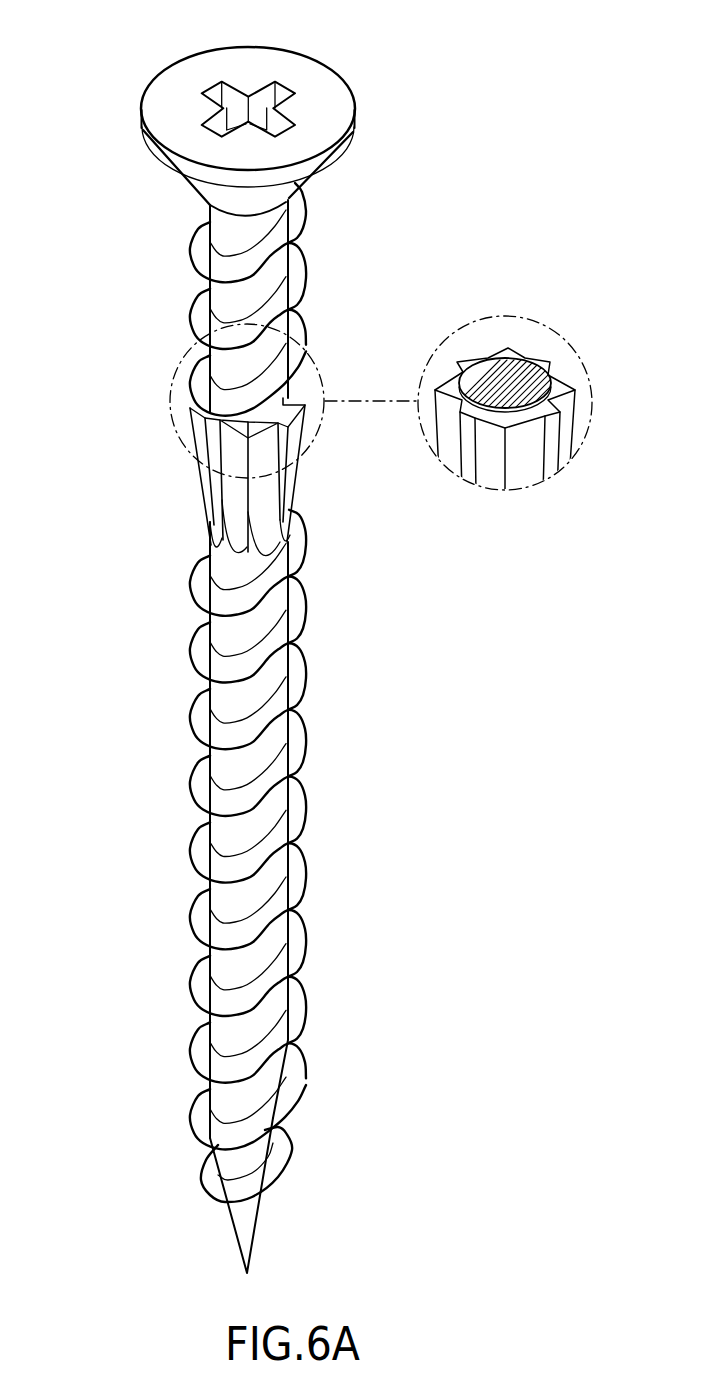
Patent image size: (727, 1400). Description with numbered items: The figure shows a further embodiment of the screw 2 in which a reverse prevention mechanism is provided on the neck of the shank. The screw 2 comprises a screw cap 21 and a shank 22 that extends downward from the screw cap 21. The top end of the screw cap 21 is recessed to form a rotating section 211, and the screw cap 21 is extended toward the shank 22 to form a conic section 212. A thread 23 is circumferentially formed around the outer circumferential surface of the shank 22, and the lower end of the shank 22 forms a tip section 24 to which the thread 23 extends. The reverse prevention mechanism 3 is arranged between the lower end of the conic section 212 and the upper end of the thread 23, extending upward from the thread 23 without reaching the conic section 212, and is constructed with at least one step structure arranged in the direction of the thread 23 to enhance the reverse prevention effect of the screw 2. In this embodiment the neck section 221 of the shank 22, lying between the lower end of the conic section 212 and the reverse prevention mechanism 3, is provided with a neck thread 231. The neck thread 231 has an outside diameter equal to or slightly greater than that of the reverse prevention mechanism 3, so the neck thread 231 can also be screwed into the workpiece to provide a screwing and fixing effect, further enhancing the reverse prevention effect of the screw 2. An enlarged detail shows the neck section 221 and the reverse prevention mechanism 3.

The screw 2 is at (427, 998).
The screw cap 21 is at (303, 75).
The rotating section 211 is at (233, 100).
The conic section 212 is at (190, 190).
The shank 22 is at (175, 820).
The neck section 221 is at (228, 302).
The thread 23 is at (297, 747).
The neck thread 231 is at (305, 273).
The tip section 24 is at (250, 1225).
The reverse prevention mechanism 3 is at (213, 490).